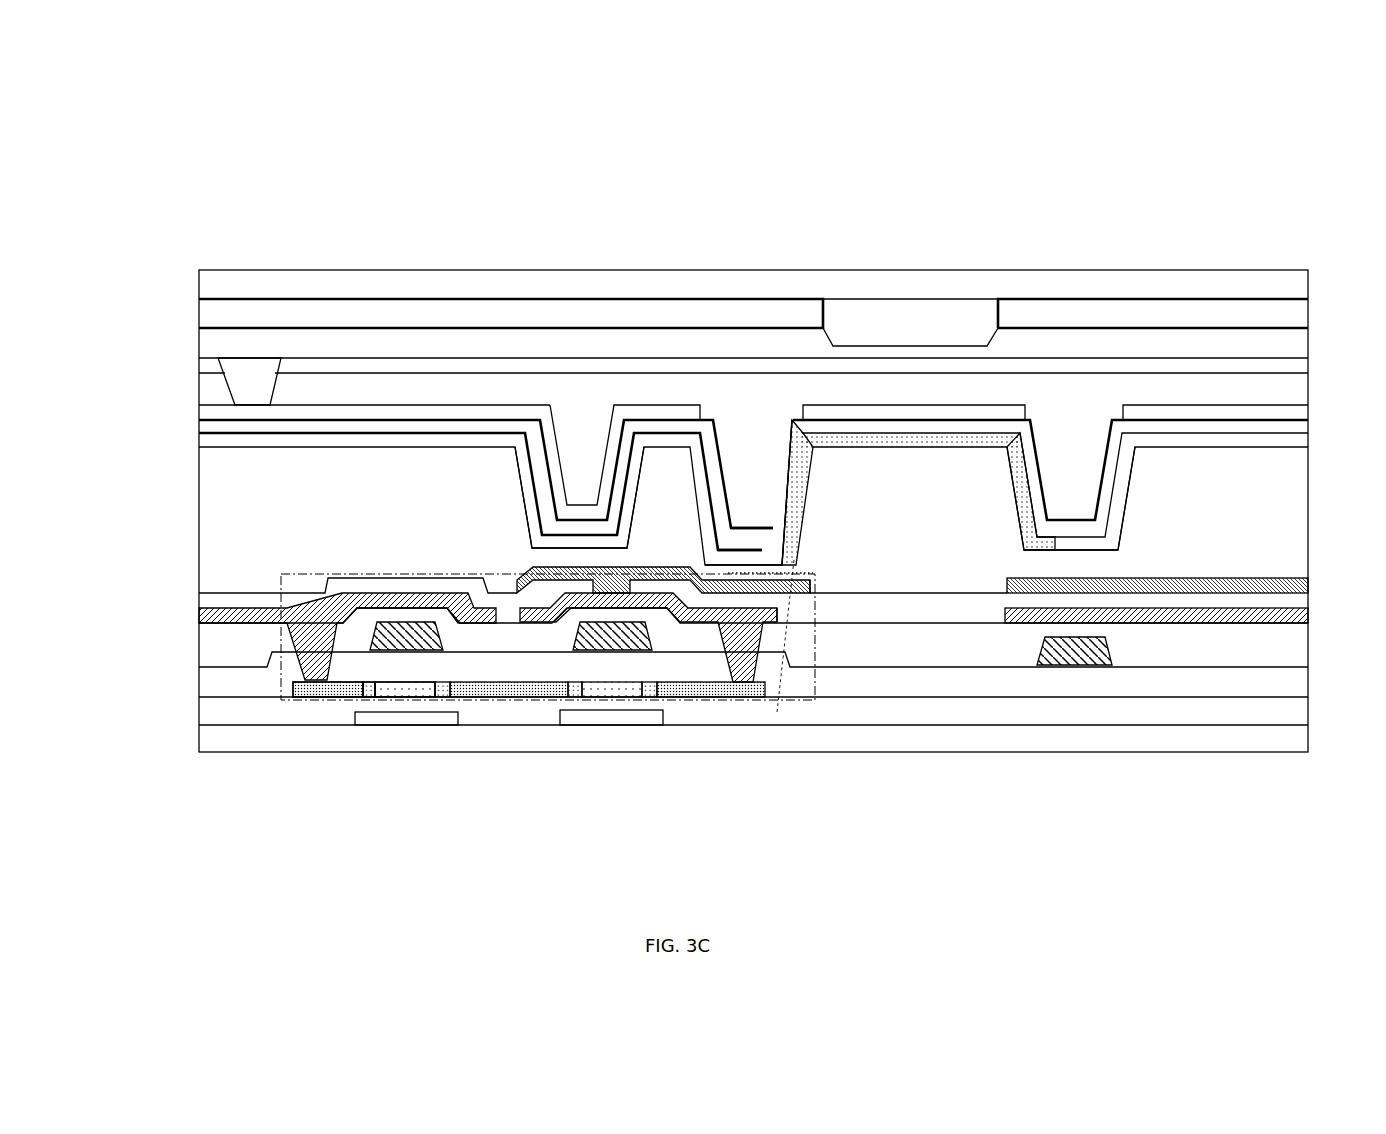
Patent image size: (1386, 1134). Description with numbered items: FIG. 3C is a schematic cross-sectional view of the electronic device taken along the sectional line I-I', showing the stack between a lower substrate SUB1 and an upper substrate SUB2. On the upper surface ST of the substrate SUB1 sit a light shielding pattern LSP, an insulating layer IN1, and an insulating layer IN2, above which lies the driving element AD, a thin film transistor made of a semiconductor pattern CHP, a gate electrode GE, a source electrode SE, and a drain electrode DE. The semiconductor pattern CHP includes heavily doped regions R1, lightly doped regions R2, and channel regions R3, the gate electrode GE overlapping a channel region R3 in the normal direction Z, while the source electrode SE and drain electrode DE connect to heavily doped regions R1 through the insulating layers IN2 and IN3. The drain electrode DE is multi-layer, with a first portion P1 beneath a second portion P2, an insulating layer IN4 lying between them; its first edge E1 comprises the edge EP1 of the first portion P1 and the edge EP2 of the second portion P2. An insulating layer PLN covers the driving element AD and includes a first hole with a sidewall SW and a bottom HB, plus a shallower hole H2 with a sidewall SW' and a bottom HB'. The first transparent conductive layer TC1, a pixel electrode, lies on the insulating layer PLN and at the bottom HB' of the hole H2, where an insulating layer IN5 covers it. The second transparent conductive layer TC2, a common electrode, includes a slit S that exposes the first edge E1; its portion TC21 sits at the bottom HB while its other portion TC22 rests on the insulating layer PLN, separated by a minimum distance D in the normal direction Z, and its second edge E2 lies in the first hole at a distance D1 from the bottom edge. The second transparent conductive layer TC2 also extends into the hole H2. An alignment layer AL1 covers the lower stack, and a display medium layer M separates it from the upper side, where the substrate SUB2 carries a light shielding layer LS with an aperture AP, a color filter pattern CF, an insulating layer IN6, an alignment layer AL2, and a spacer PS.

The driving element AD is at (110, 105).
The gate electrode GE is at (493, 636).
The semiconductor pattern CHP is at (186, 232).
The source electrode SE is at (392, 600).
The drain electrode DE is at (137, 216).
The heavily doped region R1 is at (339, 692).
The lightly doped region R2 is at (371, 692).
The channel region R3 is at (416, 692).
The first portion P1 is at (1005, 623).
The second portion P2 is at (1240, 585).
The normal direction Z is at (1367, 220).
The substrate SUB2 is at (1296, 283).
The light shielding layer LS is at (208, 312).
The color filter pattern CF is at (912, 325).
The aperture AP is at (826, 316).
The slit S is at (1080, 500).
The distance D1 is at (796, 530).
The insulating layer IN6 is at (1296, 347).
The spacer PS is at (236, 384).
The alignment layer AL2 is at (1296, 367).
The display medium layer M is at (1296, 383).
The alignment layer AL1 is at (210, 410).
The second transparent conductive layer TC2 is at (749, 365).
The other portion of the second transparent conductive layer TC22 is at (632, 420).
The portion of the second transparent conductive layer TC21 is at (740, 526).
The insulating layer IN5 is at (1296, 444).
The insulating layer PLN is at (1296, 492).
The first transparent conductive layer TC1 is at (912, 440).
The sidewall SW is at (851, 492).
The sidewall SW' is at (1178, 498).
The hole H2 is at (513, 471).
The bottom HB is at (713, 695).
The bottom HB' is at (1086, 563).
The minimum distance D is at (720, 535).
The second edge E2 is at (752, 538).
The first edge E1 is at (942, 540).
The edge of the second portion EP2 is at (816, 585).
The edge of the first portion EP1 is at (786, 616).
The insulating layer IN4 is at (1296, 604).
The insulating layer IN3 is at (1296, 648).
The insulating layer IN2 is at (1296, 683).
The insulating layer IN1 is at (1296, 710).
The substrate SUB1 is at (1296, 740).
The light shielding pattern LSP is at (600, 718).
The upper surface ST is at (210, 721).
The sectional line end I is at (202, 788).
The sectional line end I' is at (1307, 788).